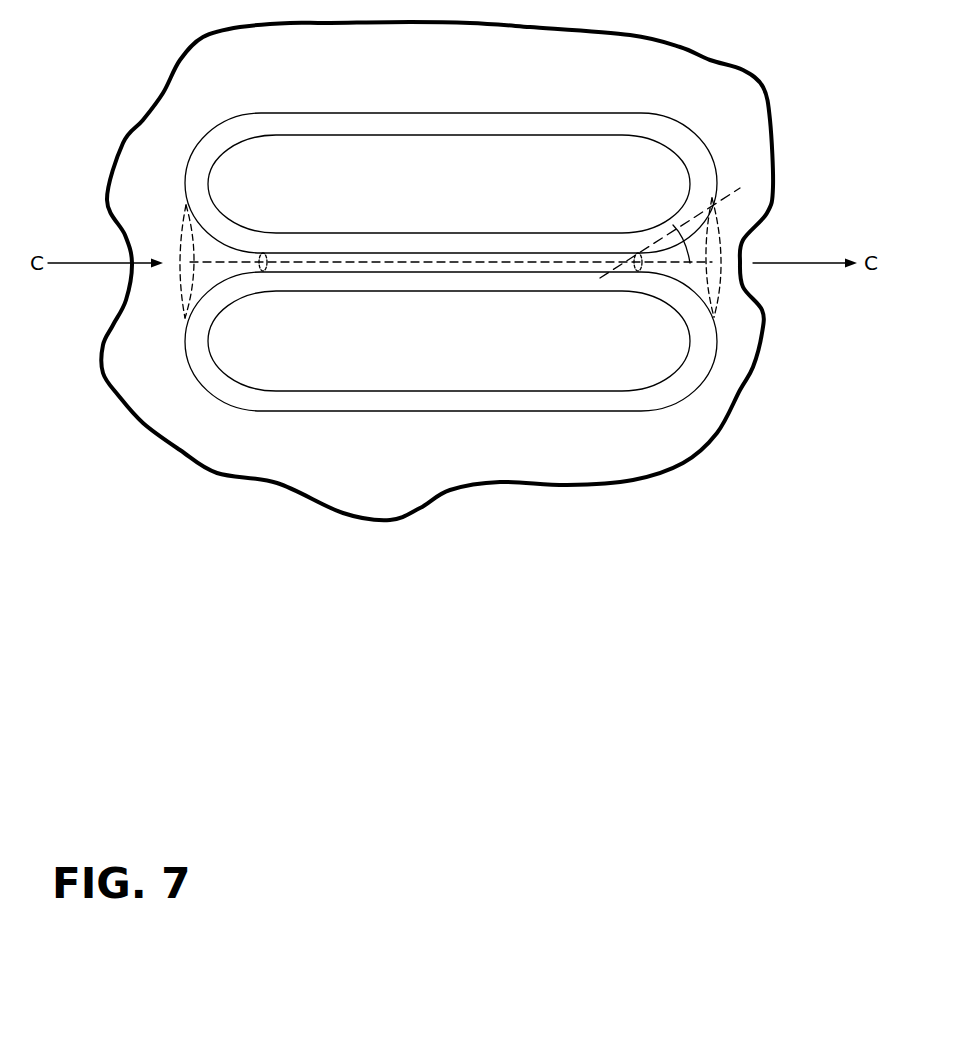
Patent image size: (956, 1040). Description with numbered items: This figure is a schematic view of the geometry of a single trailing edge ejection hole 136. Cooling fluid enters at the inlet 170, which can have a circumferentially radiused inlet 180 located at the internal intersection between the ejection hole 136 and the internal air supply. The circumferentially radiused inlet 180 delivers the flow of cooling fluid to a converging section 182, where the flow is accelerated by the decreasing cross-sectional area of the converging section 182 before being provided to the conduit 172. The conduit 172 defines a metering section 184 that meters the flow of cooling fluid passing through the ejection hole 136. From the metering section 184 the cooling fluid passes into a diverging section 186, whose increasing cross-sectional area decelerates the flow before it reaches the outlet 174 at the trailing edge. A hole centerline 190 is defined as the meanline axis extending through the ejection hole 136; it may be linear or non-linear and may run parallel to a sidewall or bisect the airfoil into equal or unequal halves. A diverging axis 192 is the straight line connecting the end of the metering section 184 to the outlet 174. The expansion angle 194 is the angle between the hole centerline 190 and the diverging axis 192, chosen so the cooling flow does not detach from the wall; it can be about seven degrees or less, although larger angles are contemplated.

The ejection hole 136 is at (522, 430).
The inlet 170 is at (168, 299).
The conduit 172 is at (469, 289).
The outlet 174 is at (732, 285).
The circumferentially radiused inlet 180 is at (180, 228).
The converging section 182 is at (235, 268).
The metering section 184 is at (432, 265).
The diverging section 186 is at (673, 270).
The hole centerline 190 is at (402, 262).
The diverging axis 192 is at (705, 225).
The expansion angle 194 is at (722, 225).